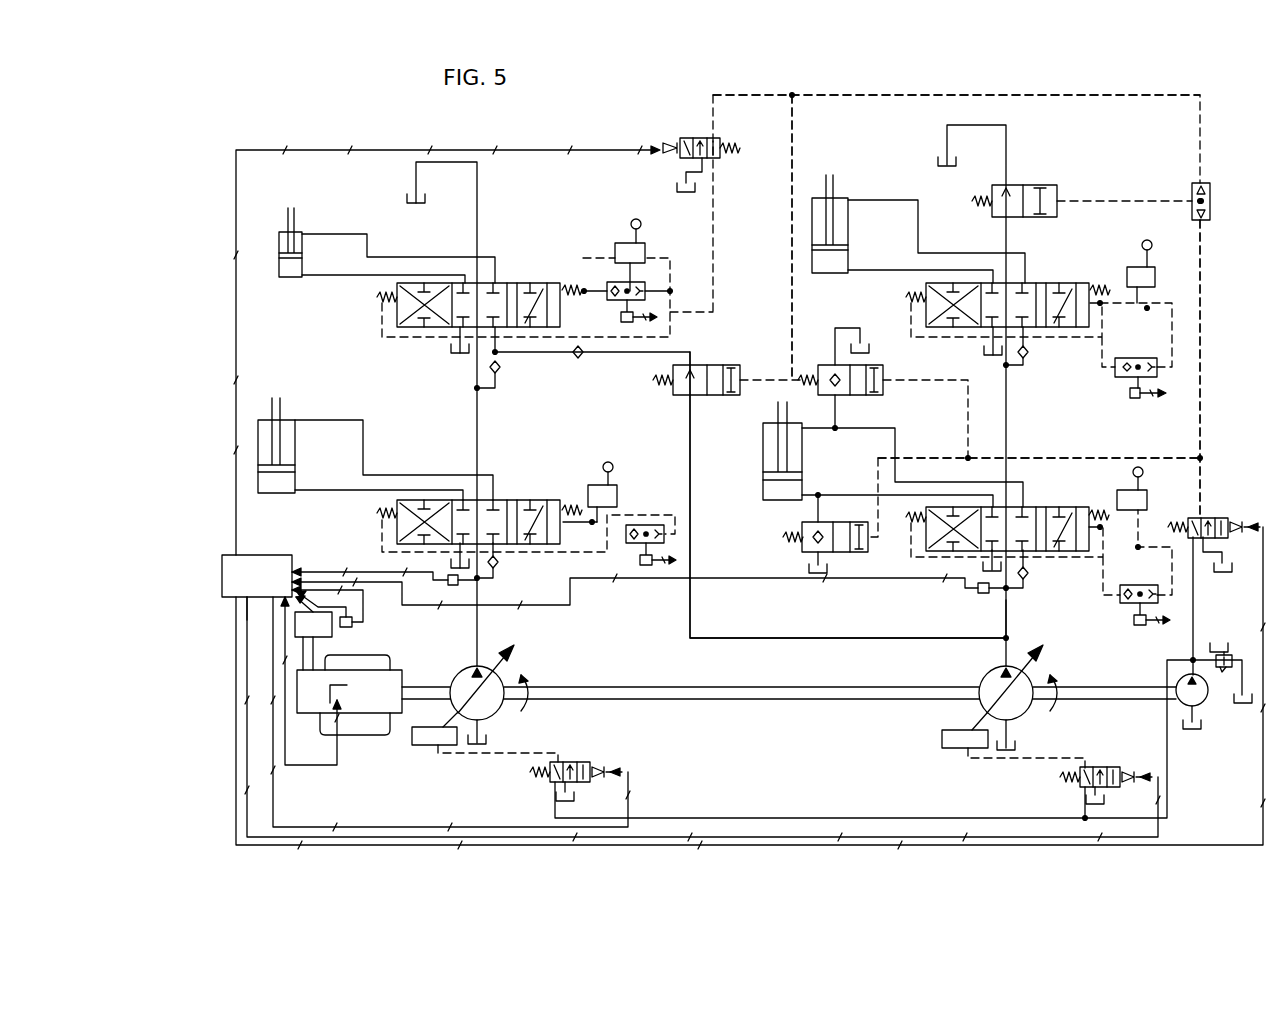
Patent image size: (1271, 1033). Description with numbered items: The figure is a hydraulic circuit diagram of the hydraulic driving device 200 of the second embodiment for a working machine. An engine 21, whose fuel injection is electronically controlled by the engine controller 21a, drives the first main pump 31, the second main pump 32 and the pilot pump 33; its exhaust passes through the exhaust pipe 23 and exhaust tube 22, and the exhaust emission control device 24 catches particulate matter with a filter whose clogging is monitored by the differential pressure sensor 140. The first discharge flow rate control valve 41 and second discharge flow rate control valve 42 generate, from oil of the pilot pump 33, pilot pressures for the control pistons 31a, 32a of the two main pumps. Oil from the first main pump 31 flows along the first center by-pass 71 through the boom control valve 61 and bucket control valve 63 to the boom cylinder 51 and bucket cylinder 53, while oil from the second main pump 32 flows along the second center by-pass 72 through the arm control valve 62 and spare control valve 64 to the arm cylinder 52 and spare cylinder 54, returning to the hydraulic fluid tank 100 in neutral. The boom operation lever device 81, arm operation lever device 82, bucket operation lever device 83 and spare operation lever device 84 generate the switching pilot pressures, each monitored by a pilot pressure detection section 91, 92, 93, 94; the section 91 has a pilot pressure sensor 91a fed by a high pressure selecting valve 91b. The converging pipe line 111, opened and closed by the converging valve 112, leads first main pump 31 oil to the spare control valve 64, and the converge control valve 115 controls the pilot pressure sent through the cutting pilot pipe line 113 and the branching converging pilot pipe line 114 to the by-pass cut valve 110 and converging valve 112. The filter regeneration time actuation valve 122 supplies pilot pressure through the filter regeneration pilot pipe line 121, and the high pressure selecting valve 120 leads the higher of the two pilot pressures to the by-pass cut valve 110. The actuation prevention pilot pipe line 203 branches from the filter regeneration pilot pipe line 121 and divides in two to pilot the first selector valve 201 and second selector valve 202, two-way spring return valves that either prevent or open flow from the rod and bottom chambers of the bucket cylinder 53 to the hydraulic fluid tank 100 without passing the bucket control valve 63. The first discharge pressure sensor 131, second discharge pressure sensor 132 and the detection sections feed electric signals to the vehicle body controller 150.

The hydraulic driving device 200 is at (302, 133).
The vehicle body controller 150 is at (222, 560).
The exhaust tube 22 is at (300, 620).
The exhaust emission control device 24 is at (295, 628).
The exhaust pipe 23 is at (302, 658).
The engine 21 is at (392, 660).
The engine controller 21a is at (343, 692).
The differential pressure sensor 140 is at (355, 625).
The second center by-pass 72 is at (480, 632).
The second main pump 32 is at (500, 710).
The control piston 32a is at (422, 748).
The second discharge flow rate control valve 42 is at (590, 762).
The first discharge flow rate control valve 41 is at (1105, 767).
The first main pump 31 is at (985, 673).
The control piston 31a is at (948, 750).
The pilot pump 33 is at (1208, 700).
The first center by-pass 71 is at (1004, 622).
The first discharge pressure sensor 131 is at (976, 590).
The second discharge pressure sensor 132 is at (470, 592).
The converging pipe line 111 is at (778, 640).
The pilot pressure detection section 92 is at (640, 568).
The pilot pressure detection section 93 is at (1130, 608).
The pilot pressure detection section 91 is at (1122, 385).
The pilot pressure sensor 91a is at (1136, 400).
The high pressure selecting valve 91b is at (1115, 362).
The spare cylinder 54 is at (302, 233).
The arm cylinder 52 is at (295, 420).
The boom cylinder 51 is at (848, 200).
The bucket cylinder 53 is at (763, 453).
The spare control valve 64 is at (432, 330).
The arm control valve 62 is at (505, 500).
The boom control valve 61 is at (1068, 283).
The bucket control valve 63 is at (1065, 507).
The hydraulic fluid tank 100 is at (455, 355).
The pilot pressure detection section 94 is at (598, 280).
The spare operation lever device 84 is at (647, 243).
The arm operation lever device 82 is at (617, 490).
The boom operation lever device 81 is at (1155, 268).
The bucket operation lever device 83 is at (1147, 493).
The converge control valve 115 is at (682, 138).
The cutting pilot pipe line 113 is at (820, 95).
The converging pilot pipe line 114 is at (800, 133).
The converging valve 112 is at (738, 362).
The by-pass cut valve 110 is at (1057, 185).
The high pressure selecting valve 120 is at (1210, 200).
The filter regeneration pilot pipe line 121 is at (1202, 380).
The actuation prevention pilot pipe line 203 is at (1175, 456).
The first selector valve 201 is at (885, 395).
The second selector valve 202 is at (800, 548).
The filter regeneration time actuation valve 122 is at (1222, 518).